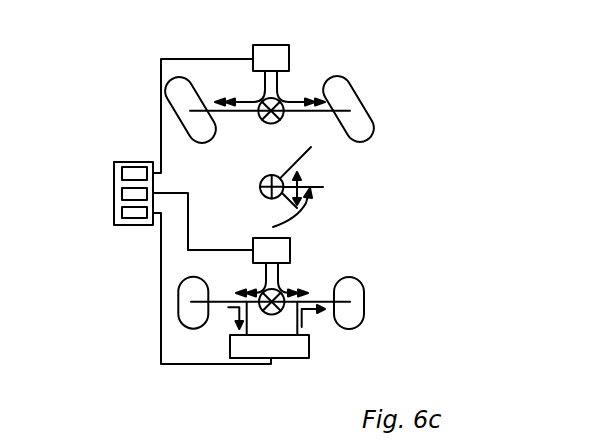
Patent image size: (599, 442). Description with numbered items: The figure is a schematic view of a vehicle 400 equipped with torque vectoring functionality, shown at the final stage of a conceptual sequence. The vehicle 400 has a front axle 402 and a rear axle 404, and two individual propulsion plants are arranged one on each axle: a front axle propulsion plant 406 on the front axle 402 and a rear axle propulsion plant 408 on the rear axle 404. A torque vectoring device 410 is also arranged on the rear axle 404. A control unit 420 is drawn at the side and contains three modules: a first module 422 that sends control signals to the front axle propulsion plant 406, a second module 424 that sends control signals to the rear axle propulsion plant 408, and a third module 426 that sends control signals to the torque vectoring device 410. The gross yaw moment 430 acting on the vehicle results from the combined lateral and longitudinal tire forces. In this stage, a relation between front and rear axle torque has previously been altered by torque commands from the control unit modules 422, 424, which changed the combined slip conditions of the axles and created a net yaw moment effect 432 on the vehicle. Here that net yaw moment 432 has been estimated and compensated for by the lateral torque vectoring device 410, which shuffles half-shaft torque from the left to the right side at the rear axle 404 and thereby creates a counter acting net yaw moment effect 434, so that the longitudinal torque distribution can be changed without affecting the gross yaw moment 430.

The vehicle 400 is at (393, 107).
The front axle 402 is at (323, 110).
The rear axle 404 is at (313, 302).
The front axle propulsion plant 406 is at (277, 45).
The rear axle propulsion plant 408 is at (290, 247).
The torque vectoring device 410 is at (309, 358).
The control unit 420 is at (137, 162).
The first module 422 is at (114, 170).
The second module 424 is at (114, 204).
The third module 426 is at (137, 225).
The gross yaw moment 430 is at (278, 212).
The net yaw moment effect 432 is at (302, 208).
The counter acting net yaw moment effect 434 is at (326, 187).